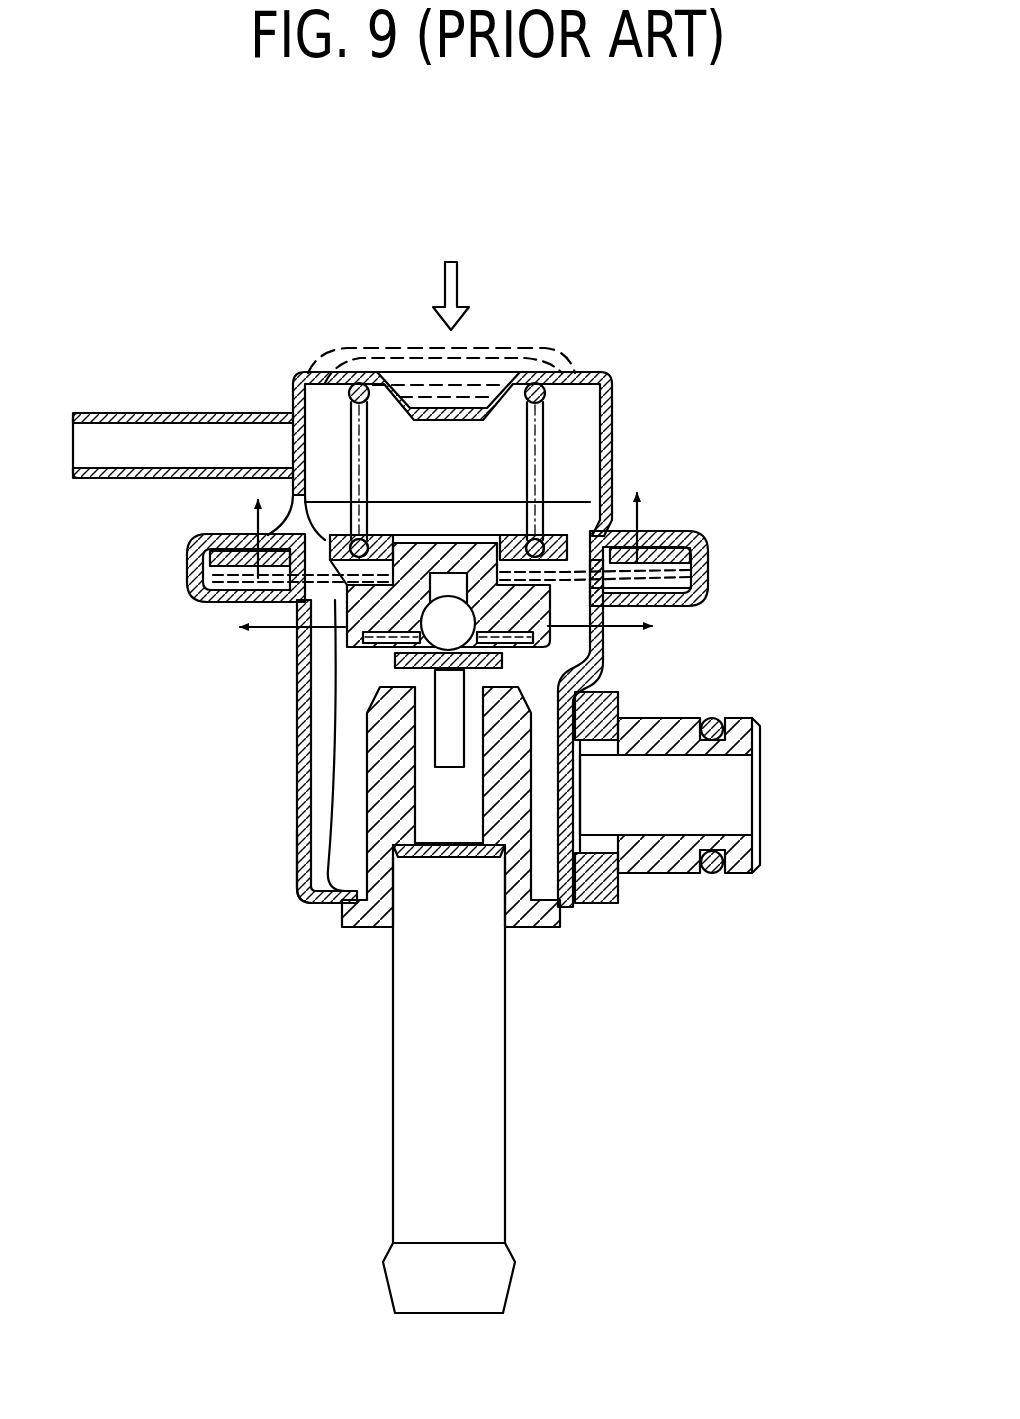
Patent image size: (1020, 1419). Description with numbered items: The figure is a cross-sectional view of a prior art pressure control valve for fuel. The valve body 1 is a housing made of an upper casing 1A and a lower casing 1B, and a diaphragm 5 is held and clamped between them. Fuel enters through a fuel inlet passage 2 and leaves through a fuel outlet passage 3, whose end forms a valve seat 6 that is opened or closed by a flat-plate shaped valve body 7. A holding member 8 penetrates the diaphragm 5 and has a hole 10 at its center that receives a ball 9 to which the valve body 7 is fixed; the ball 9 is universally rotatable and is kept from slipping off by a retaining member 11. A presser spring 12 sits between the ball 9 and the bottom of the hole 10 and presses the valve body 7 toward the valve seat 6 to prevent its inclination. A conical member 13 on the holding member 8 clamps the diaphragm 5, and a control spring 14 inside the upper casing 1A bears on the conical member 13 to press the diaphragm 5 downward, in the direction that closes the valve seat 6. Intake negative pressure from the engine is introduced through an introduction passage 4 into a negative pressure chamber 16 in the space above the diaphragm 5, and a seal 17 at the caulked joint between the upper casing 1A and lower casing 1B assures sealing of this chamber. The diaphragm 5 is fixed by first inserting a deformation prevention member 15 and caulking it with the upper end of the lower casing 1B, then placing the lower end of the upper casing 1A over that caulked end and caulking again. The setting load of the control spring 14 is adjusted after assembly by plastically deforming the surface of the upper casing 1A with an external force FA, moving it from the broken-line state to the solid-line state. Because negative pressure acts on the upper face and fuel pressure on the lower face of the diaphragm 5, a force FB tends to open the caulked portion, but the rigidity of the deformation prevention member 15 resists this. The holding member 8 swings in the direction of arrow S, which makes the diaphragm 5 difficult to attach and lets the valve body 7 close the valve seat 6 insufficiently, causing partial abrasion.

The valve body 1 is at (295, 783).
The upper casing 1A is at (612, 468).
The lower casing 1B is at (297, 855).
The fuel inlet passage 2 is at (678, 738).
The fuel outlet passage 3 is at (505, 1040).
The introduction passage 4 is at (128, 413).
The diaphragm 5 is at (310, 614).
The valve seat 6 is at (482, 684).
The valve body 7 is at (402, 670).
The holding member 8 is at (410, 535).
The ball 9 is at (437, 690).
The hole 10 is at (297, 702).
The retaining member 11 is at (695, 602).
The presser spring 12 is at (450, 628).
The conical member 13 is at (340, 535).
The control spring 14 is at (537, 383).
The deformation prevention member 15 is at (245, 600).
The negative pressure chamber 16 is at (428, 481).
The seal 17 is at (210, 536).
The external force FA is at (457, 278).
The force to open the caulked portion FB is at (451, 530).
The arrow S is at (446, 632).